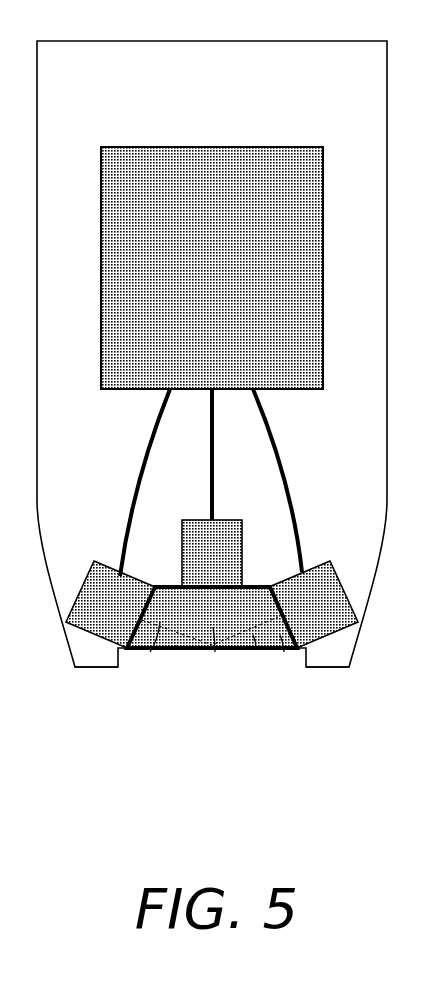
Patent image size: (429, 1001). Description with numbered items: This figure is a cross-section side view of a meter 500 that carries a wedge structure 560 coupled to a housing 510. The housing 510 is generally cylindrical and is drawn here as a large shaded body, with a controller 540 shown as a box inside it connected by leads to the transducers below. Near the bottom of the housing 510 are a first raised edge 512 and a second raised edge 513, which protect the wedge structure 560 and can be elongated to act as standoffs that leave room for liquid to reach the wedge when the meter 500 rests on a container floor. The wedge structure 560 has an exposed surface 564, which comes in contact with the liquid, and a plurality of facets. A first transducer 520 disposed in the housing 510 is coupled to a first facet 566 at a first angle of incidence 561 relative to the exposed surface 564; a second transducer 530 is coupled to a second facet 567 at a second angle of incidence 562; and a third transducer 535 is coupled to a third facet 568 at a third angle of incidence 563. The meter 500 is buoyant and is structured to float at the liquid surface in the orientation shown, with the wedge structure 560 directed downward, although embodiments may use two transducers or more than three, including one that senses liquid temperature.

The meter 500 is at (345, 23).
The housing 510 is at (212, 354).
The first raised edge 512 is at (90, 669).
The second raised edge 513 is at (334, 669).
The first transducer 520 is at (110, 604).
The second transducer 530 is at (212, 488).
The third transducer 535 is at (313, 604).
The controller 540 is at (212, 268).
The wedge structure 560 is at (212, 617).
The first angle of incidence 561 is at (150, 652).
The second angle of incidence 562 is at (215, 652).
The third angle of incidence 563 is at (256, 648).
The exposed surface 564 is at (176, 648).
The first facet 566 is at (161, 586).
The second facet 567 is at (262, 586).
The third facet 568 is at (284, 652).